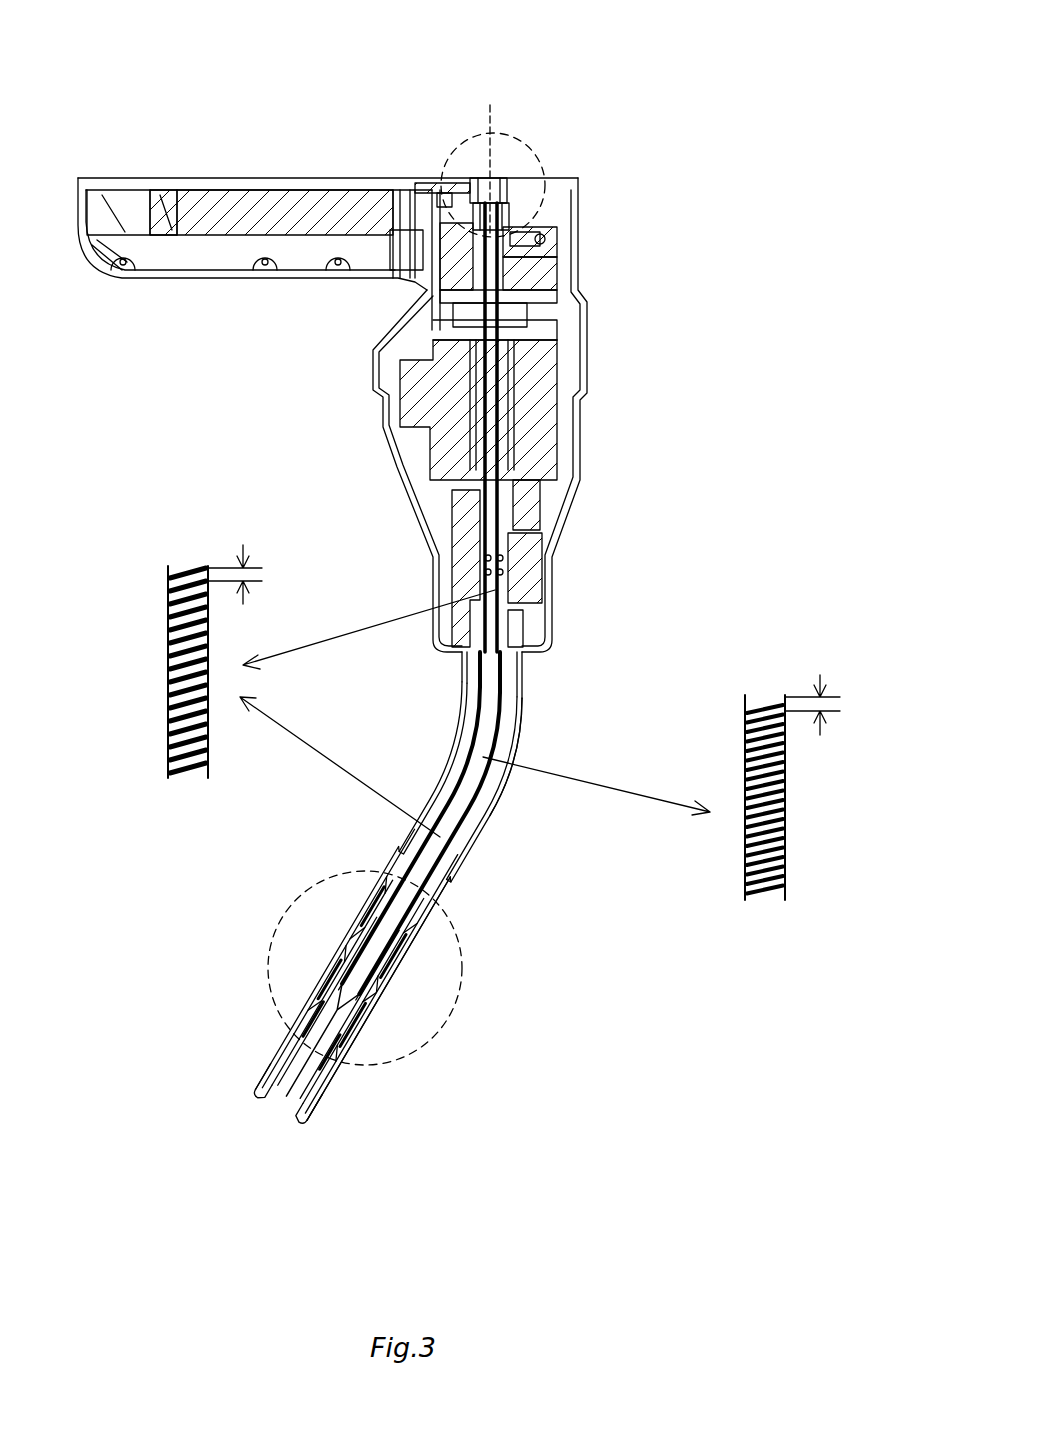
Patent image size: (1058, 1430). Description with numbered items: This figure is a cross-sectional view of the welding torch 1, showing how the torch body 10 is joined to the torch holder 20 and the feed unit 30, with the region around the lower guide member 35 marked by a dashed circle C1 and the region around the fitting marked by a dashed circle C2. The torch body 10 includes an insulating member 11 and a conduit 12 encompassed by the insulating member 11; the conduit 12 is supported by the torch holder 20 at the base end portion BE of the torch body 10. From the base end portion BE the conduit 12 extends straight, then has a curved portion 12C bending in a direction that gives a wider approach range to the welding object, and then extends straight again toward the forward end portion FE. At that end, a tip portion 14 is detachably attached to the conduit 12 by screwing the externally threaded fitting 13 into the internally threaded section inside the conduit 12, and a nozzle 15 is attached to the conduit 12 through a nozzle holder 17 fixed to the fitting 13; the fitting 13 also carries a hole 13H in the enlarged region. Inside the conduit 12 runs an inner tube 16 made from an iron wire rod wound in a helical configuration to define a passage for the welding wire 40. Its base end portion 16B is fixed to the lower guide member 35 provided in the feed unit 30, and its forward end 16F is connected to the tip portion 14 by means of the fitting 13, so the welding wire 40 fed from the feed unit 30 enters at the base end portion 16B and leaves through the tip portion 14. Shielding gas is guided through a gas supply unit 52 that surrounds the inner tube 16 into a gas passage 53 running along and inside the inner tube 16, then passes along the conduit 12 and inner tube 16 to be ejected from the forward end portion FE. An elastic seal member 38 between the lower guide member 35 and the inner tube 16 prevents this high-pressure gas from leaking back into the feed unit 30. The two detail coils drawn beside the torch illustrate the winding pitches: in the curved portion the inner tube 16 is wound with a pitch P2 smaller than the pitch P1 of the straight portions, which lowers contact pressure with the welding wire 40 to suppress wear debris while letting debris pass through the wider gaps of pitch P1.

The welding torch 1 is at (512, 95).
The feed unit 30 is at (375, 178).
The welding wire 40 is at (487, 122).
The enlarged region C1 is at (507, 165).
The lower guide member 35 is at (475, 222).
The elastic seal member 38 is at (525, 185).
The base end portion of the inner tube 16B is at (500, 226).
The gas supply unit 52 is at (520, 265).
The gas passage 53 is at (505, 368).
The torch holder 20 is at (585, 438).
The inner tube 16 is at (505, 510).
The winding pitch in the straight portions P1 is at (254, 574).
The winding pitch in the curved portion P2 is at (832, 705).
The conduit 12 is at (457, 680).
The base end portion of the torch body BE is at (538, 663).
The curved portion of the conduit 12C is at (505, 745).
The insulating member 11 is at (440, 790).
The torch body 10 is at (490, 825).
The fitting 13 is at (440, 890).
The nozzle holder 17 is at (425, 920).
The hole of inner tube 13H is at (330, 962).
The enlarged region C2 is at (458, 1003).
The forward end of the inner tube 16F is at (367, 987).
The forward end of the torch body FE is at (243, 1087).
The nozzle 15 is at (318, 1100).
The tip portion 14 is at (285, 1125).